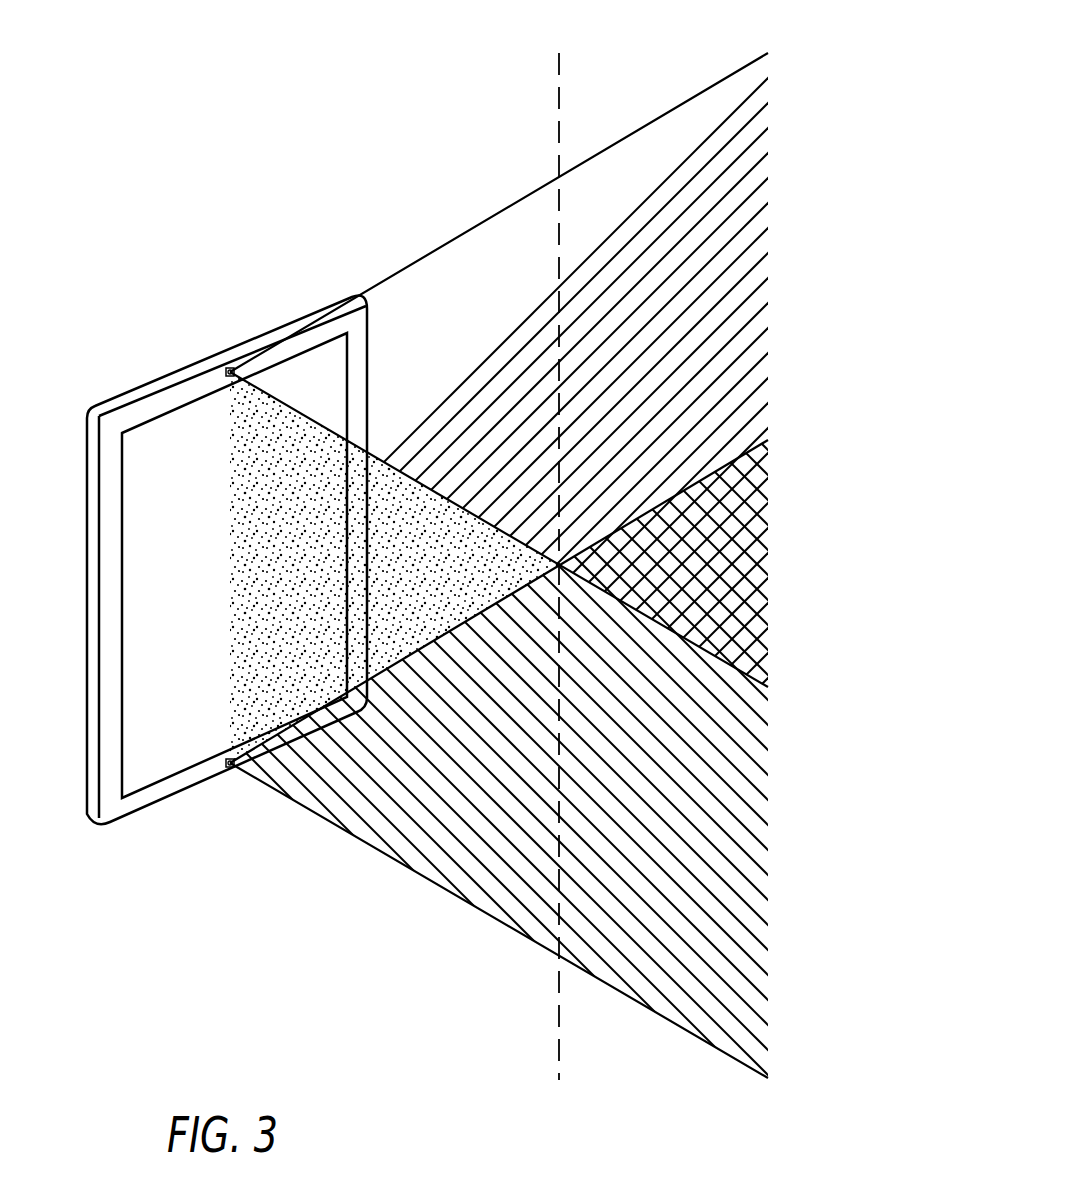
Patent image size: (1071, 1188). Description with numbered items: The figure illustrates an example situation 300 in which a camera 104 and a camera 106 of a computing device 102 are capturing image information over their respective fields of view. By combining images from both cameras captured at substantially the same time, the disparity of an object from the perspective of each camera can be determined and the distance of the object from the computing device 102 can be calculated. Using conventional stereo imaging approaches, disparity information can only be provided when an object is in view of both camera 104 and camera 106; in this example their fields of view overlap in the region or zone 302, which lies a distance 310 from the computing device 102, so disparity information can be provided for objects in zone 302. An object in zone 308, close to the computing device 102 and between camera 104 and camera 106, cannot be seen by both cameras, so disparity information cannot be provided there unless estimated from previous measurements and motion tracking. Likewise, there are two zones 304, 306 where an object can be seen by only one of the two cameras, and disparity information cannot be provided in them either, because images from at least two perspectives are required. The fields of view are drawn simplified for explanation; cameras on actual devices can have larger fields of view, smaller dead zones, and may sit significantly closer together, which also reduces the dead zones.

The example situation 300 is at (170, 150).
The computing device 102 is at (130, 402).
The camera 104 is at (230, 366).
The camera 106 is at (230, 770).
The region or zone 302 is at (742, 542).
The zone 304 is at (500, 262).
The zone 306 is at (515, 890).
The zone 308 is at (258, 546).
The distance 310 is at (558, 118).